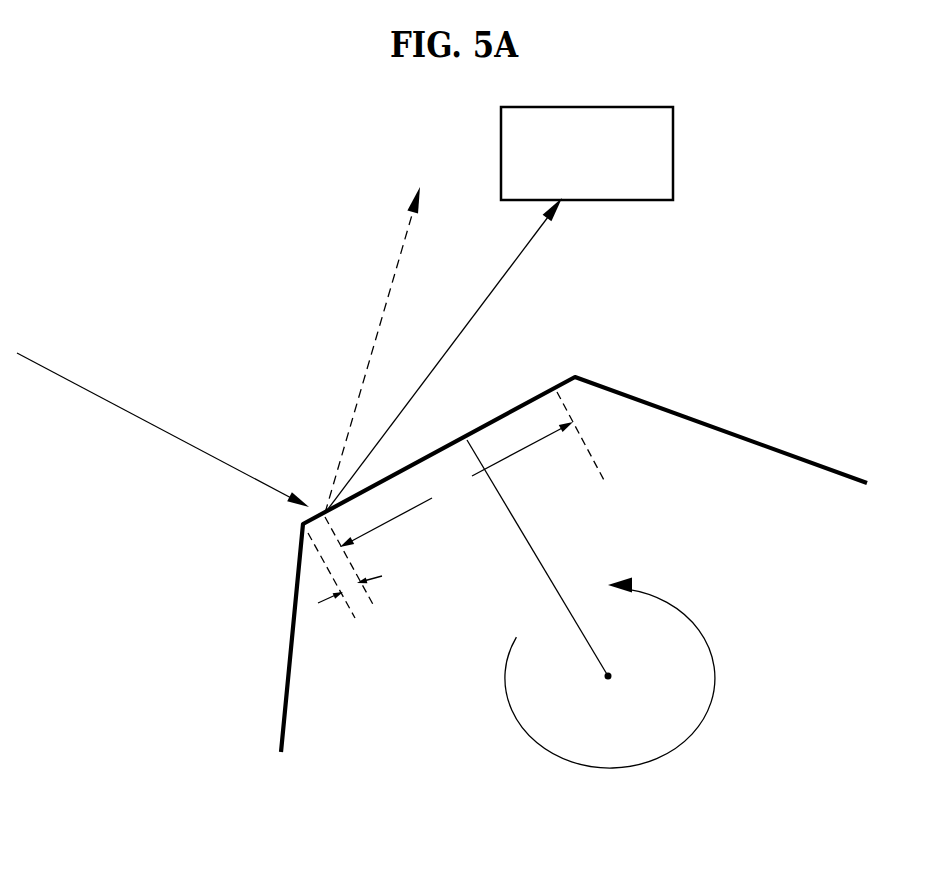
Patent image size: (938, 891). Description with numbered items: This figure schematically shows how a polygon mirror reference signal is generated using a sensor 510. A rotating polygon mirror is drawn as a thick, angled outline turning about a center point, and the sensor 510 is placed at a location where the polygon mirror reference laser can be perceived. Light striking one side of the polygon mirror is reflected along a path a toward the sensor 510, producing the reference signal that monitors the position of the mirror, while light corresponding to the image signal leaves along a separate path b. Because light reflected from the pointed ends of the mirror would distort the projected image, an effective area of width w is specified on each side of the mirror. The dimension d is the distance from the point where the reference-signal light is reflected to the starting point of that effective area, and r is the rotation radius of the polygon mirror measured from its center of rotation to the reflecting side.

The sensor 510 is at (673, 155).
The path of light generating the polygon mirror reference signal a is at (459, 355).
The path of light corresponding to an image signal b is at (383, 330).
The width of the effective area w is at (472, 469).
The distance to the starting point of the effective area d is at (355, 567).
The rotation radius of the polygon mirror r is at (539, 560).